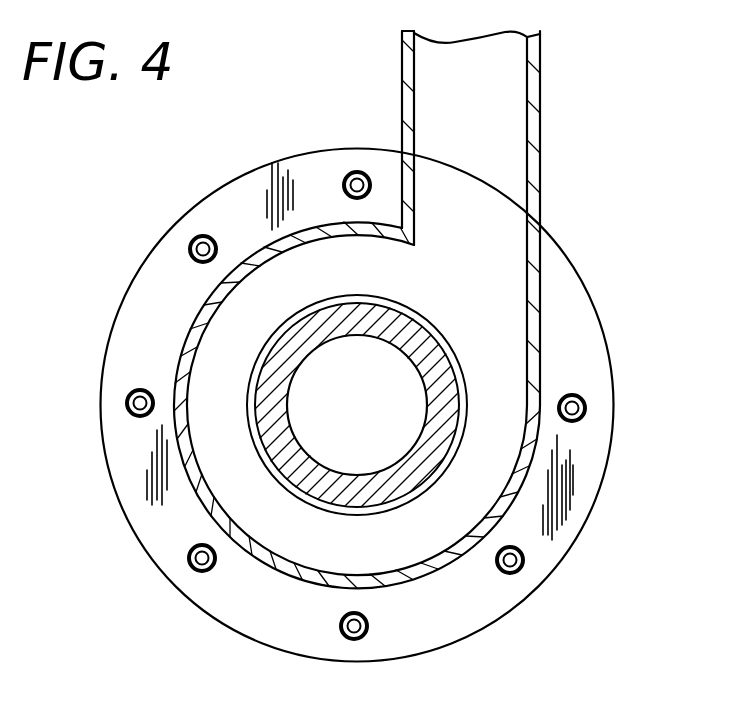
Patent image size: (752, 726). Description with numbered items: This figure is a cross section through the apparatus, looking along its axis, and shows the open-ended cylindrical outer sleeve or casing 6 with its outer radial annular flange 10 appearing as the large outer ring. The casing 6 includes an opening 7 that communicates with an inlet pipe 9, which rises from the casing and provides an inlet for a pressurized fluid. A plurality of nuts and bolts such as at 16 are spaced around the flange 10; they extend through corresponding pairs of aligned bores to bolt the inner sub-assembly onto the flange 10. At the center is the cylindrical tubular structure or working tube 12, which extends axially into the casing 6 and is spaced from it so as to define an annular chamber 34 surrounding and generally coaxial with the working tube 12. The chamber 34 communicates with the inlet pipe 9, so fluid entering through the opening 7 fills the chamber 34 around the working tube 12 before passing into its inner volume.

The casing 6 is at (200, 303).
The opening 7 is at (493, 300).
The inlet pipe 9 is at (542, 92).
The flange 10 is at (607, 380).
The working tube 12 is at (265, 368).
The nuts and bolts 16 is at (359, 170).
The annular chamber 34 is at (253, 504).